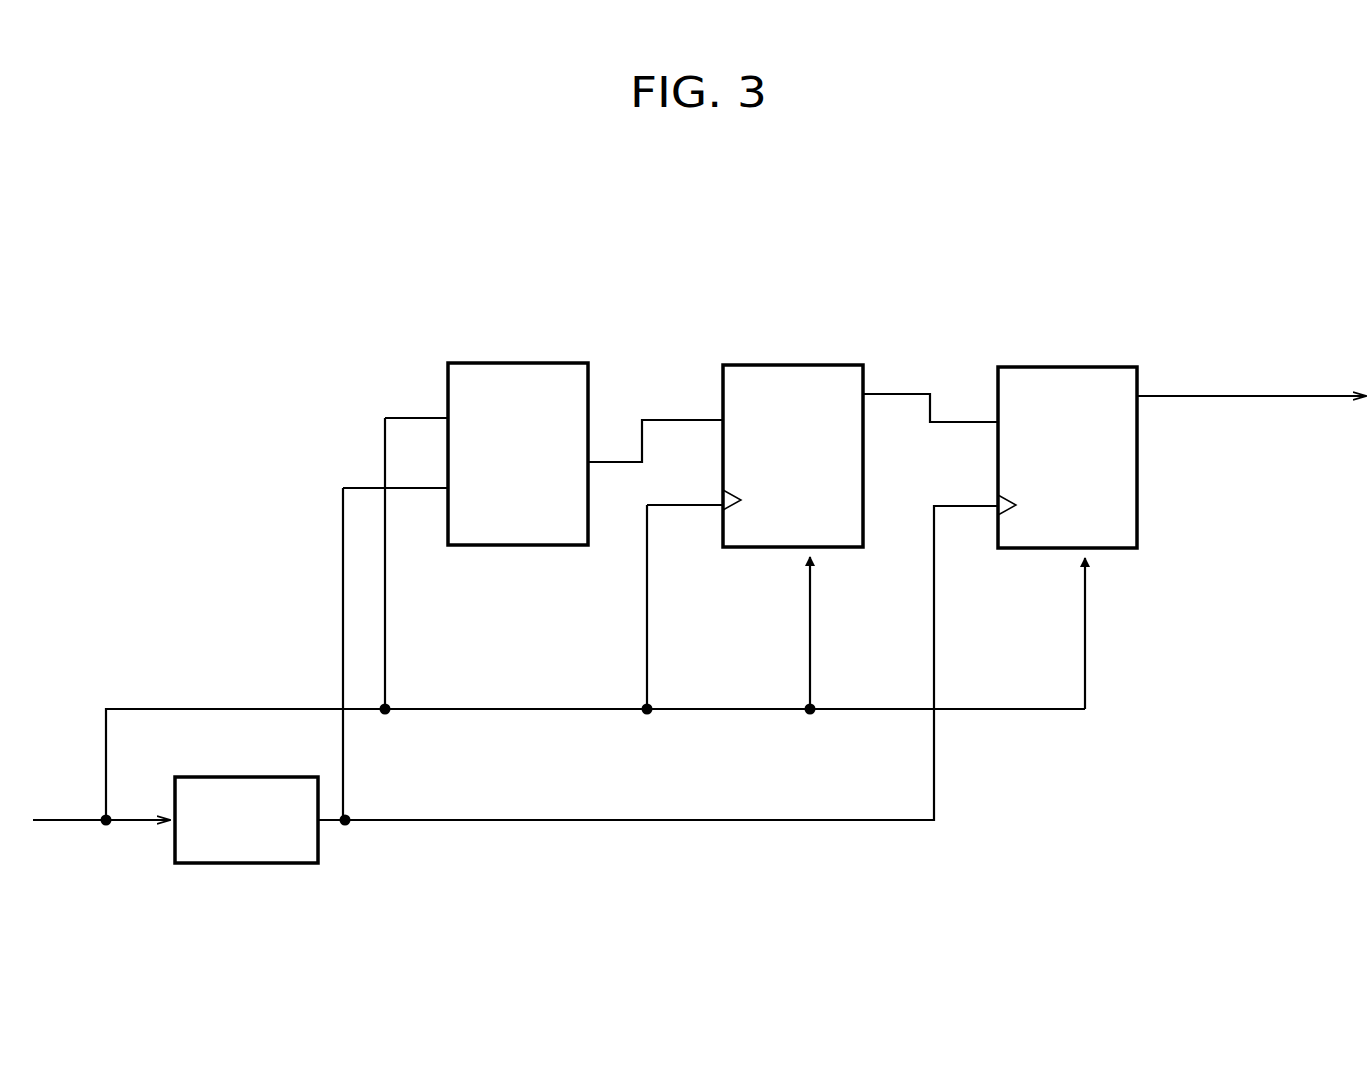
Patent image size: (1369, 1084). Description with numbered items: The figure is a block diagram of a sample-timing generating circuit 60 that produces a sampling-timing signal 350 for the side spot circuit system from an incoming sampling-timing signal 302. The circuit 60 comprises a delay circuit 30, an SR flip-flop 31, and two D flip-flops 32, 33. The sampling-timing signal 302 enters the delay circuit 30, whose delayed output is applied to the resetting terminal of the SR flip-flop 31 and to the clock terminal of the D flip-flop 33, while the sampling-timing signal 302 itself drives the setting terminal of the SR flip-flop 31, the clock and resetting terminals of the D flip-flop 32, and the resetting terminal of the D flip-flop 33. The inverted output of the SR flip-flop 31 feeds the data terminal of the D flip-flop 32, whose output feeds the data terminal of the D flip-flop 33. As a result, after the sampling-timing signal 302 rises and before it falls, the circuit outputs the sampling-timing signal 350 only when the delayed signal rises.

The sample-timing generating circuit 60 is at (323, 266).
The sampling-timing signal 302 is at (62, 826).
The delay circuit 30 is at (268, 777).
The SR flip-flop 31 is at (485, 363).
The D flip-flop 32 is at (799, 365).
The D flip-flop 33 is at (1103, 367).
The sampling-timing signal 350 is at (1247, 400).